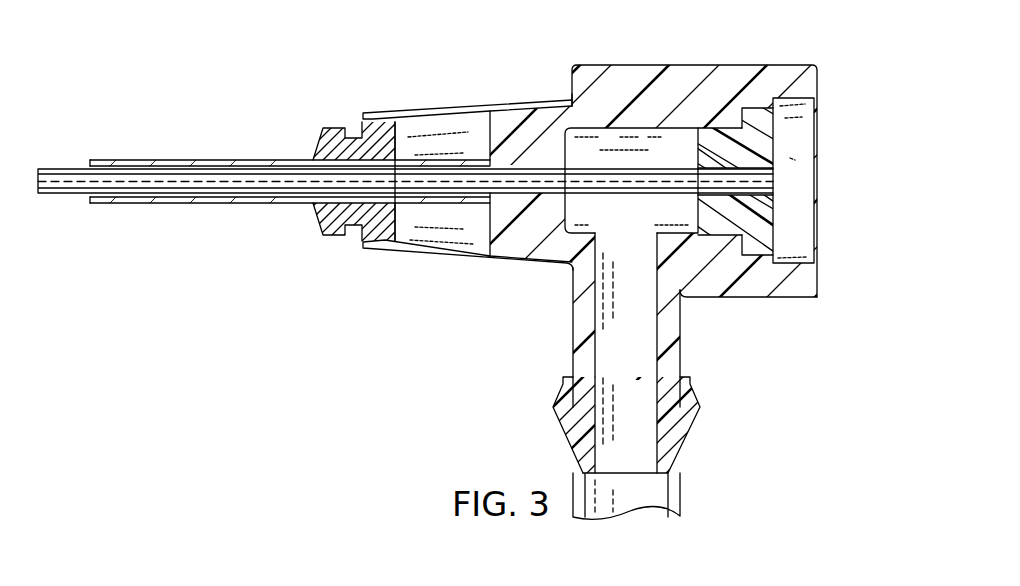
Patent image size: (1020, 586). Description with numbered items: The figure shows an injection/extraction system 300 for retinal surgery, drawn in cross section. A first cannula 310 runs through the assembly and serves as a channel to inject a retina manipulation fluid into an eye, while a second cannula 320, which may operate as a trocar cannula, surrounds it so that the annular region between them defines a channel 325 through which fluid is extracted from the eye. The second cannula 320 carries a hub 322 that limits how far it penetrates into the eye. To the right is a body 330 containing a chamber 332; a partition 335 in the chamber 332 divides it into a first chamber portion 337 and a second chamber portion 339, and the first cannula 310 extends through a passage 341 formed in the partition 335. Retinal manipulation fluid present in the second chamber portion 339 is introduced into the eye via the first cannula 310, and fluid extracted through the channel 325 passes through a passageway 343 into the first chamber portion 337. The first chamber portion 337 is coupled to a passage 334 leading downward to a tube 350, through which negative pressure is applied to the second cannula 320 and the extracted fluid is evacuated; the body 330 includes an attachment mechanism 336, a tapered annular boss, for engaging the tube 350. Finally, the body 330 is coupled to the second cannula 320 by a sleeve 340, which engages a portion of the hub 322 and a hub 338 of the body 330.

The injection/extraction system 300 is at (380, 282).
The first cannula 310 is at (65, 170).
The second cannula 320 is at (203, 160).
The hub 322 is at (333, 127).
The channel 325 is at (85, 205).
The body 330 is at (700, 301).
The chamber 332 is at (572, 78).
The passage 334 is at (648, 367).
The partition 335 is at (757, 110).
The attachment mechanism 336 is at (687, 428).
The first chamber portion 337 is at (667, 125).
The hub 338 is at (548, 100).
The second chamber portion 339 is at (808, 178).
The sleeve 340 is at (420, 111).
The passage 341 is at (763, 300).
The passageway 343 is at (567, 207).
The tube 350 is at (682, 505).